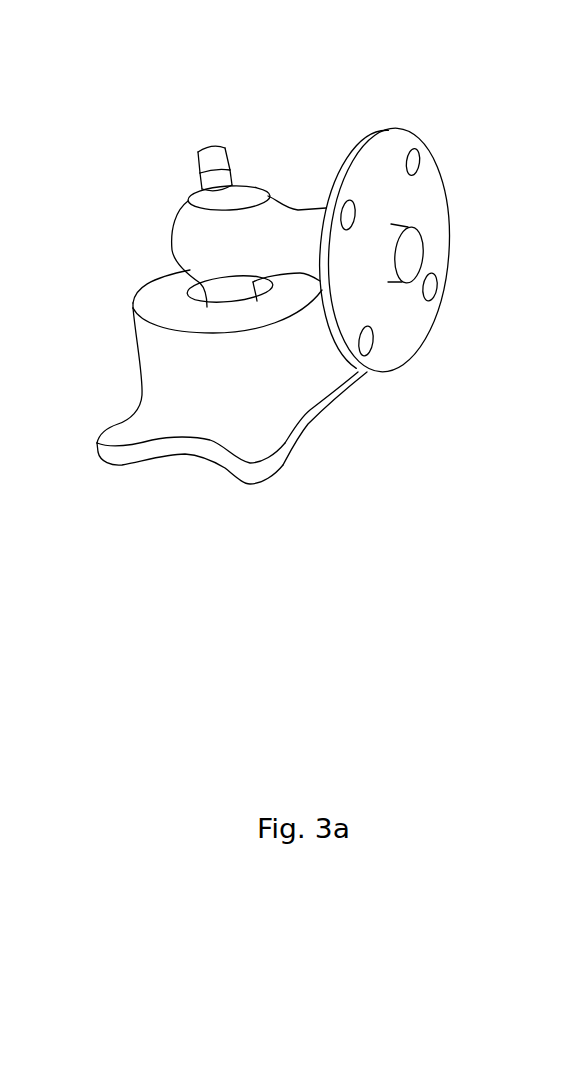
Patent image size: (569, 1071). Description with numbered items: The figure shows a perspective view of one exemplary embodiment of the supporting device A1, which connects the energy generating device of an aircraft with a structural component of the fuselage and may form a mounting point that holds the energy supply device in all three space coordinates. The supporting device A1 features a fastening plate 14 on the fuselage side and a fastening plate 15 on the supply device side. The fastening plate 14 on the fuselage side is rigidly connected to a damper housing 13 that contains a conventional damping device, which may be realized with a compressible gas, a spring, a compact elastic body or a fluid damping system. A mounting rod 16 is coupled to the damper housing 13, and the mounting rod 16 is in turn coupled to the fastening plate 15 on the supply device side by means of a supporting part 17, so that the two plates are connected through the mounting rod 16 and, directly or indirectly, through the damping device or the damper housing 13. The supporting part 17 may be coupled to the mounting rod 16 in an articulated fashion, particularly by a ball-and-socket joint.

The supporting device A1 is at (160, 531).
The damper housing 13 is at (160, 360).
The fastening plate on the fuselage side 14 is at (320, 402).
The fastening plate on the supply device side 15 is at (423, 204).
The mounting rod 16 is at (220, 292).
The supporting part 17 is at (280, 218).